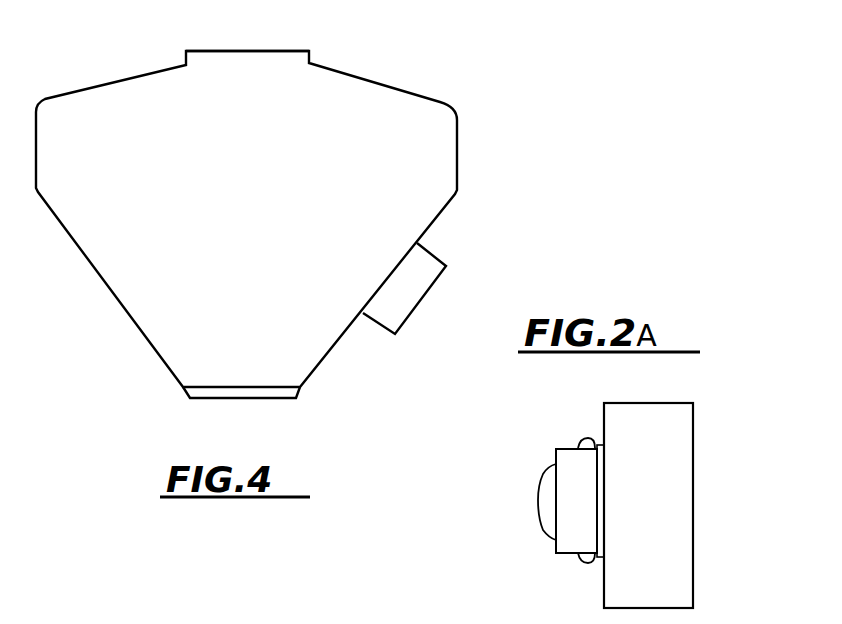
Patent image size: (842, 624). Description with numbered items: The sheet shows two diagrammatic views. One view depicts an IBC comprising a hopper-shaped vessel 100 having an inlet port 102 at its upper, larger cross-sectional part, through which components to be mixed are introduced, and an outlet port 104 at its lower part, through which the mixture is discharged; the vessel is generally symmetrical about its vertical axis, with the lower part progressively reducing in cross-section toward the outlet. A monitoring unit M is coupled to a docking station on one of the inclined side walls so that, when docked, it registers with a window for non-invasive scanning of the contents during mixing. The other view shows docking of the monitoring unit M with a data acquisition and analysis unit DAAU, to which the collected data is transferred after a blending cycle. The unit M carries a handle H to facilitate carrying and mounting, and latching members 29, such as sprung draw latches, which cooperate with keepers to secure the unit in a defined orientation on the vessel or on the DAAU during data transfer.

In FIG. 4, the hopper-shaped vessel 100 is at (490, 201).
In FIG. 4, the inlet port 102 is at (212, 55).
In FIG. 4, the outlet port 104 is at (208, 393).
In FIG. 4, the monitoring unit M is at (425, 278).
In FIG. 2A, the monitoring unit M is at (575, 537).
In FIG. 2A, the data acquisition and analysis unit DAAU is at (630, 420).
In FIG. 2A, the handle H is at (549, 500).
In FIG. 2A, the latching member 29 is at (586, 440).